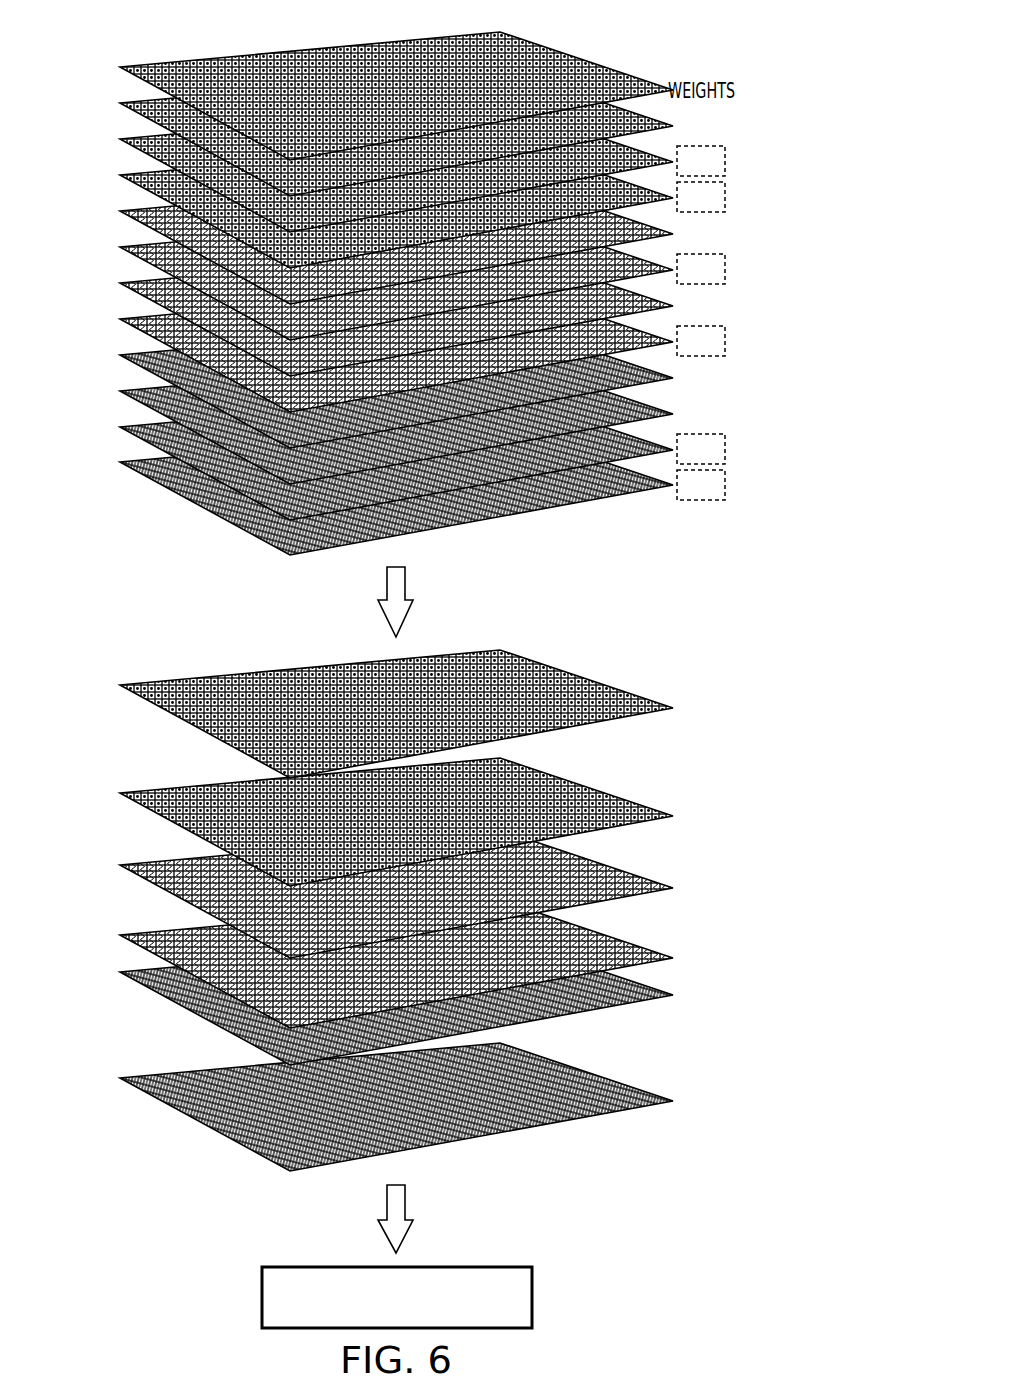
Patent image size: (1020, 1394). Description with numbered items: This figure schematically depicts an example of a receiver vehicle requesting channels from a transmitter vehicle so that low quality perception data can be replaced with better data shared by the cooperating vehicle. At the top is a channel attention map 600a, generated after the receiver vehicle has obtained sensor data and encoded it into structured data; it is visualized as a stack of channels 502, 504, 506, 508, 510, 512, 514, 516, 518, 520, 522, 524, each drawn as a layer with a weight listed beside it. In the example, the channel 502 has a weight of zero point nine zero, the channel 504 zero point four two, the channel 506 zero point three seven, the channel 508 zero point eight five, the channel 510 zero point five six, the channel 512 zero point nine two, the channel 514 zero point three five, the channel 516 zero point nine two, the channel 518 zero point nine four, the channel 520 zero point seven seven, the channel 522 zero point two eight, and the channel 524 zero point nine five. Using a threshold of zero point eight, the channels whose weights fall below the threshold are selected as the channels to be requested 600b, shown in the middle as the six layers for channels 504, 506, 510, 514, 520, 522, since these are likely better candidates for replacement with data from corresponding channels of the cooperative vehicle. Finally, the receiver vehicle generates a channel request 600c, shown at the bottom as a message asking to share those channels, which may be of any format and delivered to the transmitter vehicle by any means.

The channel 502 is at (150, 64).
The channel 504 is at (150, 100).
The channel 506 is at (150, 136).
The channel 508 is at (150, 172).
The channel 510 is at (150, 208).
The channel 512 is at (150, 244).
The channel 514 is at (150, 280).
The channel 516 is at (150, 316).
The channel 518 is at (150, 352).
The channel 520 is at (150, 388).
The channel 522 is at (150, 424).
The channel 524 is at (150, 459).
The channel attention map 600a is at (641, 28).
The channels to be requested 600b is at (598, 640).
The channel request 600c is at (515, 1230).